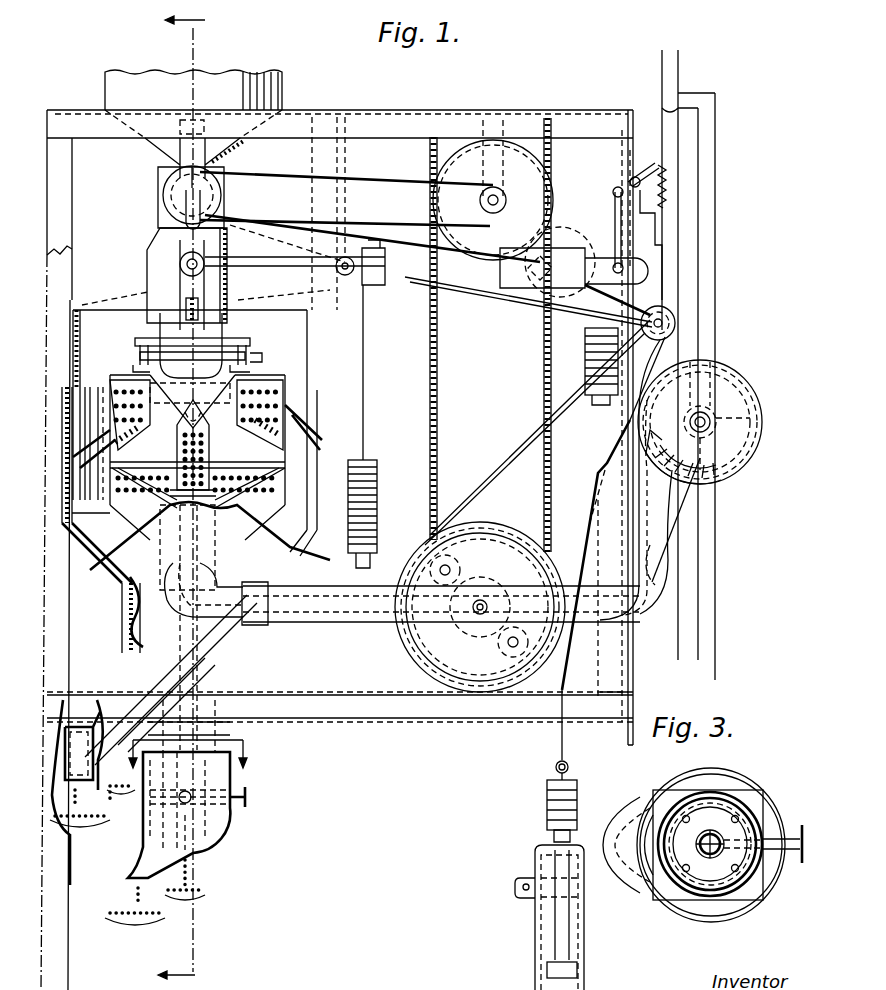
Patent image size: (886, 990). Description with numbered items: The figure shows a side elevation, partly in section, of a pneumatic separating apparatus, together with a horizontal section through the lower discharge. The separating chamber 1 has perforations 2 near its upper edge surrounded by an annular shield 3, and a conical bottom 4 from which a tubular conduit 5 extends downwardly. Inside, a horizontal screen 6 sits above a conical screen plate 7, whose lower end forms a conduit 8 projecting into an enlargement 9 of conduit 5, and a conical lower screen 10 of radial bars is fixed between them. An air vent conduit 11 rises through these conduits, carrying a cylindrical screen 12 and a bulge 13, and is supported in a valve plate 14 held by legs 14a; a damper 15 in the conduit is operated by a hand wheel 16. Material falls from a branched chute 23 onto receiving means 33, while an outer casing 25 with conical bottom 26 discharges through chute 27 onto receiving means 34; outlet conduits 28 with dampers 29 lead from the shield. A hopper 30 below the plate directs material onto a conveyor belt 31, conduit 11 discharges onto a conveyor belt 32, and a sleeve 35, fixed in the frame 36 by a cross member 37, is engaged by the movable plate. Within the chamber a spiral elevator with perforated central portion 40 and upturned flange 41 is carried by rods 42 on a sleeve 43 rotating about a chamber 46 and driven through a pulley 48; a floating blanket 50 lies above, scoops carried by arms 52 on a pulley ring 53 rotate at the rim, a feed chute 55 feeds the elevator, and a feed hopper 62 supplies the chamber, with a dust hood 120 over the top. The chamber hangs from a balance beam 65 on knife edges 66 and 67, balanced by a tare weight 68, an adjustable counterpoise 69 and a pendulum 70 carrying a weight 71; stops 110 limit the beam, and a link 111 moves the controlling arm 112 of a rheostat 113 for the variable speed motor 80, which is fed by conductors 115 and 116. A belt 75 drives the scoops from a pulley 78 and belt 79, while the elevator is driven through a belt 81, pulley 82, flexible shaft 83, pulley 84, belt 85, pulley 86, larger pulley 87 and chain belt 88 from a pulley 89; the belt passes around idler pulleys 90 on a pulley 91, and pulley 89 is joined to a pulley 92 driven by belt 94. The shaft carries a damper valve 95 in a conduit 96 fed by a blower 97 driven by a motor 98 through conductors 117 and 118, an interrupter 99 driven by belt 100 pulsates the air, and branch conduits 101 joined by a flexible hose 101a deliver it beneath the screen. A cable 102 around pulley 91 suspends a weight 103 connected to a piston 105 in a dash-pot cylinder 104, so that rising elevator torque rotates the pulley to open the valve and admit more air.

In FIG. 1, the separating chamber 1 is at (275, 482).
In FIG. 1, the perforations 2 is at (278, 374).
In FIG. 1, the annular shield 3 is at (186, 763).
In FIG. 1, the conical bottom 4 is at (255, 513).
In FIG. 1, the tubular conduit 5 is at (188, 499).
In FIG. 3, the tubular conduit 5 is at (690, 897).
In FIG. 1, the horizontal screen 6 is at (218, 466).
In FIG. 1, the conical screen plate 7 is at (310, 496).
In FIG. 1, the tubular conduit 8 is at (212, 535).
In FIG. 1, the enlargement 9 is at (165, 556).
In FIG. 1, the conical lower screen 10 is at (176, 462).
In FIG. 1, the air vent conduit 11 is at (192, 853).
In FIG. 3, the air vent conduit 11 is at (714, 835).
In FIG. 1, the cylindrical screen 12 is at (209, 440).
In FIG. 1, the bulge or enlargement 13 is at (193, 495).
In FIG. 3, the valve plate 14 is at (668, 897).
In FIG. 1, the legs or rods 14a is at (168, 790).
In FIG. 3, the legs or rods 14a is at (742, 808).
In FIG. 1, the discharge controlling damper 15 is at (205, 822).
In FIG. 3, the discharge controlling damper 15 is at (707, 858).
In FIG. 1, the hand wheel 16 is at (247, 800).
In FIG. 3, the hand wheel 16 is at (802, 824).
In FIG. 1, the branched chute 23 is at (82, 730).
In FIG. 1, the outer casing 25 is at (318, 455).
In FIG. 1, the conical bottom 26 is at (108, 576).
In FIG. 1, the chute 27 is at (112, 772).
In FIG. 1, the outlet conduits 28 is at (95, 430).
In FIG. 1, the dampers 29 is at (82, 452).
In FIG. 1, the hopper 30 is at (143, 836).
In FIG. 3, the hopper 30 is at (630, 812).
In FIG. 1, the conveyor belt 31 is at (120, 925).
In FIG. 1, the conveyor belt 32 is at (190, 900).
In FIG. 1, the conveyor belt or receiving means 33 is at (78, 830).
In FIG. 1, the conveyor belt or receiving means 34 is at (112, 796).
In FIG. 1, the sleeve 35 is at (240, 737).
In FIG. 3, the sleeve 35 is at (688, 800).
In FIG. 1, the frame 36 is at (628, 673).
In FIG. 1, the cross member 37 is at (235, 722).
In FIG. 1, the central conical portion 40 is at (146, 440).
In FIG. 1, the marginal upturned flange 41 is at (254, 426).
In FIG. 1, the rods 42 is at (240, 368).
In FIG. 1, the sleeve 43 is at (148, 352).
In FIG. 1, the chamber 46 is at (150, 252).
In FIG. 1, the pulley 48 is at (250, 342).
In FIG. 1, the blanket 50 is at (148, 368).
In FIG. 1, the arms 52 is at (190, 410).
In FIG. 1, the ring 53 is at (246, 352).
In FIG. 1, the material feed chute 55 is at (200, 426).
In FIG. 1, the feed hopper 62 is at (282, 92).
In FIG. 1, the balance beam 65 is at (417, 278).
In FIG. 1, the knife edges 66 is at (350, 280).
In FIG. 1, the knife edges 67 is at (181, 268).
In FIG. 1, the tare weight 68 is at (585, 368).
In FIG. 1, the adjustable counterpoise 69 is at (560, 246).
In FIG. 1, the pendulum 70 is at (365, 416).
In FIG. 1, the weight 71 is at (377, 526).
In FIG. 1, the belt 75 is at (265, 358).
In FIG. 1, the pulley 78 is at (180, 205).
In FIG. 1, the belt 79 is at (470, 306).
In FIG. 1, the variable speed electric motor 80 is at (664, 338).
In FIG. 1, the belt 81 is at (145, 332).
In FIG. 1, the pulley 82 is at (225, 336).
In FIG. 1, the flexible shaft 83 is at (186, 306).
In FIG. 1, the pulley 84 is at (168, 183).
In FIG. 1, the belt 85 is at (365, 178).
In FIG. 1, the pulley 86 is at (502, 203).
In FIG. 1, the larger pulley 87 is at (540, 180).
In FIG. 1, the chain belt 88 is at (430, 352).
In FIG. 1, the pulley 89 is at (468, 628).
In FIG. 1, the idler pulleys 90 is at (455, 565).
In FIG. 1, the pulley 91 is at (552, 560).
In FIG. 1, the pulley 92 is at (415, 658).
In FIG. 1, the belt 94 is at (520, 455).
In FIG. 1, the damper valve 95 is at (484, 600).
In FIG. 1, the conduit 96 is at (575, 590).
In FIG. 1, the blower or pump 97 is at (740, 462).
In FIG. 1, the electric motor 98 is at (760, 414).
In FIG. 1, the interrupter 99 is at (662, 555).
In FIG. 1, the belt 100 is at (680, 495).
In FIG. 1, the branch conduits 101 is at (228, 580).
In FIG. 1, the flexible hose 101a is at (350, 620).
In FIG. 1, the cable 102 is at (564, 670).
In FIG. 1, the weight 103 is at (547, 798).
In FIG. 1, the cylinder 104 is at (535, 936).
In FIG. 1, the piston 105 is at (547, 972).
In FIG. 1, the fixed stops 110 is at (624, 260).
In FIG. 1, the link 111 is at (614, 208).
In FIG. 1, the controlling arm 112 is at (630, 184).
In FIG. 1, the rheostat or speed controller 113 is at (662, 212).
In FIG. 1, the conductor 115 is at (662, 76).
In FIG. 1, the conductor 116 is at (678, 72).
In FIG. 1, the conductor 117 is at (698, 250).
In FIG. 1, the conductor 118 is at (715, 272).
In FIG. 1, the dust hood 120 is at (92, 305).